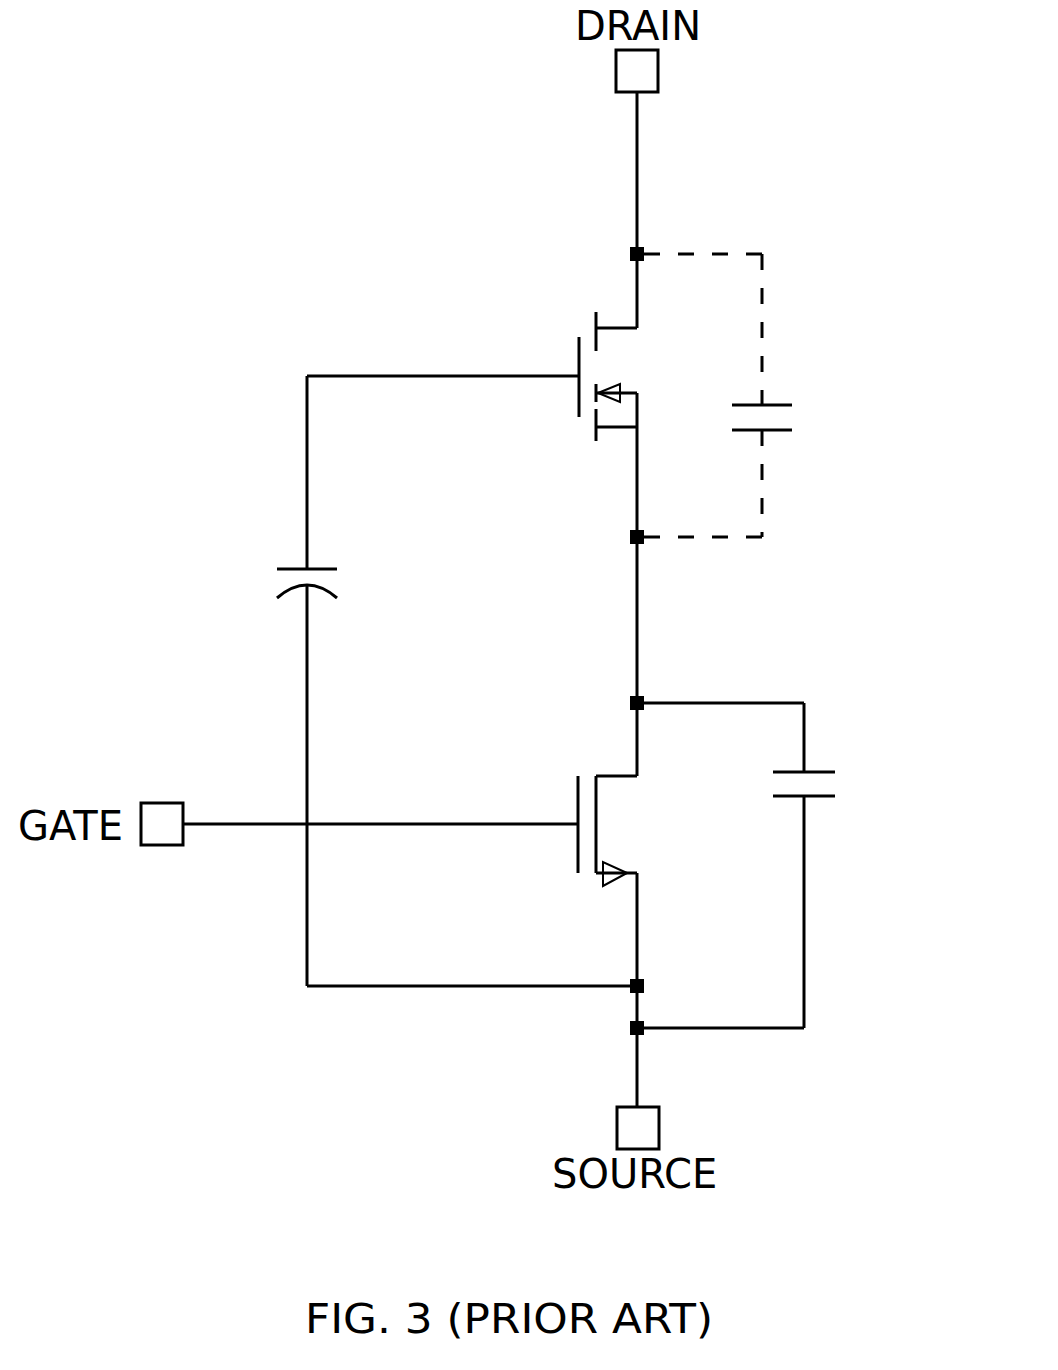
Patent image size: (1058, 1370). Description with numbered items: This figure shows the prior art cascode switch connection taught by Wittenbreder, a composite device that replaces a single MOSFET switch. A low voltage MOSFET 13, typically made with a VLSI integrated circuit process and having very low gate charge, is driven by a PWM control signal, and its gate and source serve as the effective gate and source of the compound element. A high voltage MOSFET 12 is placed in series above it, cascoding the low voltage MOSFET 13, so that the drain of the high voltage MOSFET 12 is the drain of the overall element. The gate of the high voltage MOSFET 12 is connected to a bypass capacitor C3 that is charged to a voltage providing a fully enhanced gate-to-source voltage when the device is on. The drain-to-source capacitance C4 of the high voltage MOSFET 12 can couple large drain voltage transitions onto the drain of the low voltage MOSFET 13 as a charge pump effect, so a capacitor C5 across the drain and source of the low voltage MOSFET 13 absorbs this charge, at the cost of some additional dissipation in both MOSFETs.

The high voltage MOSFET 12 is at (573, 350).
The low voltage MOSFET 13 is at (577, 797).
The bypass capacitor C3 is at (339, 576).
The drain-to-source capacitance C4 is at (750, 395).
The capacitor C5 is at (835, 785).